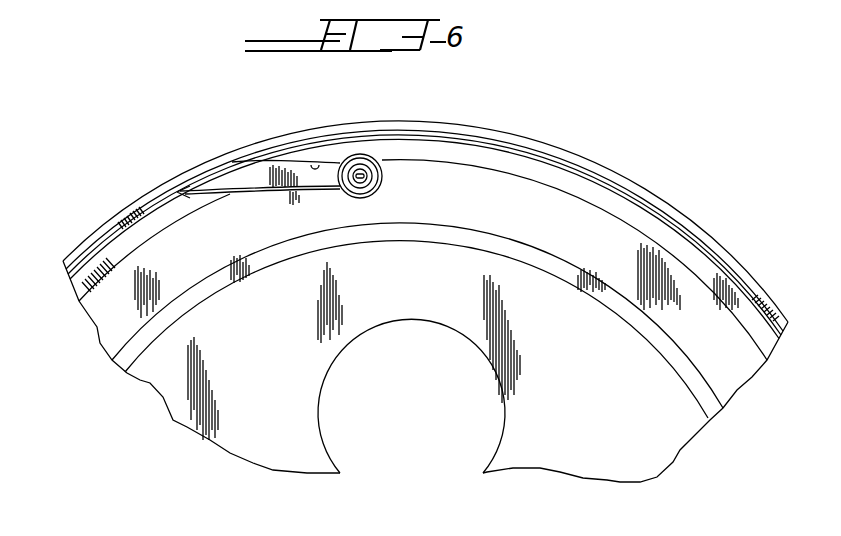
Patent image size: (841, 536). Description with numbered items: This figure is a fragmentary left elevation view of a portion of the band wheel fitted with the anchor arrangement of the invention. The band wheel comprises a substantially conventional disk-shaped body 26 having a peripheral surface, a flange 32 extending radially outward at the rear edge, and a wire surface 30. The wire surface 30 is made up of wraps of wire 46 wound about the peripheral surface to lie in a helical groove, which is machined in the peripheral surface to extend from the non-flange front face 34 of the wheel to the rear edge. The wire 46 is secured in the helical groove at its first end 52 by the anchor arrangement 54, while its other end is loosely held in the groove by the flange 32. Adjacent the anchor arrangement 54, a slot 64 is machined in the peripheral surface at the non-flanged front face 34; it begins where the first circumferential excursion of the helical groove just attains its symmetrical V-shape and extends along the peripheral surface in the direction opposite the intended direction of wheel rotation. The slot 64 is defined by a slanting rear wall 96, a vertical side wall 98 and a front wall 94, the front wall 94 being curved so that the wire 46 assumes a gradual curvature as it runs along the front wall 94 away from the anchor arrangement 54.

The disk-shaped body 26 is at (391, 310).
The wire surface 30 is at (507, 148).
The flange 32 is at (415, 127).
The non-flange front face 34 is at (637, 217).
The wire 46 is at (273, 192).
The first end 52 is at (340, 190).
The anchor arrangement 54 is at (395, 182).
The slot 64 is at (258, 176).
The front wall 94 is at (194, 194).
The slanting rear wall 96 is at (315, 163).
The vertical side wall 98 is at (238, 180).